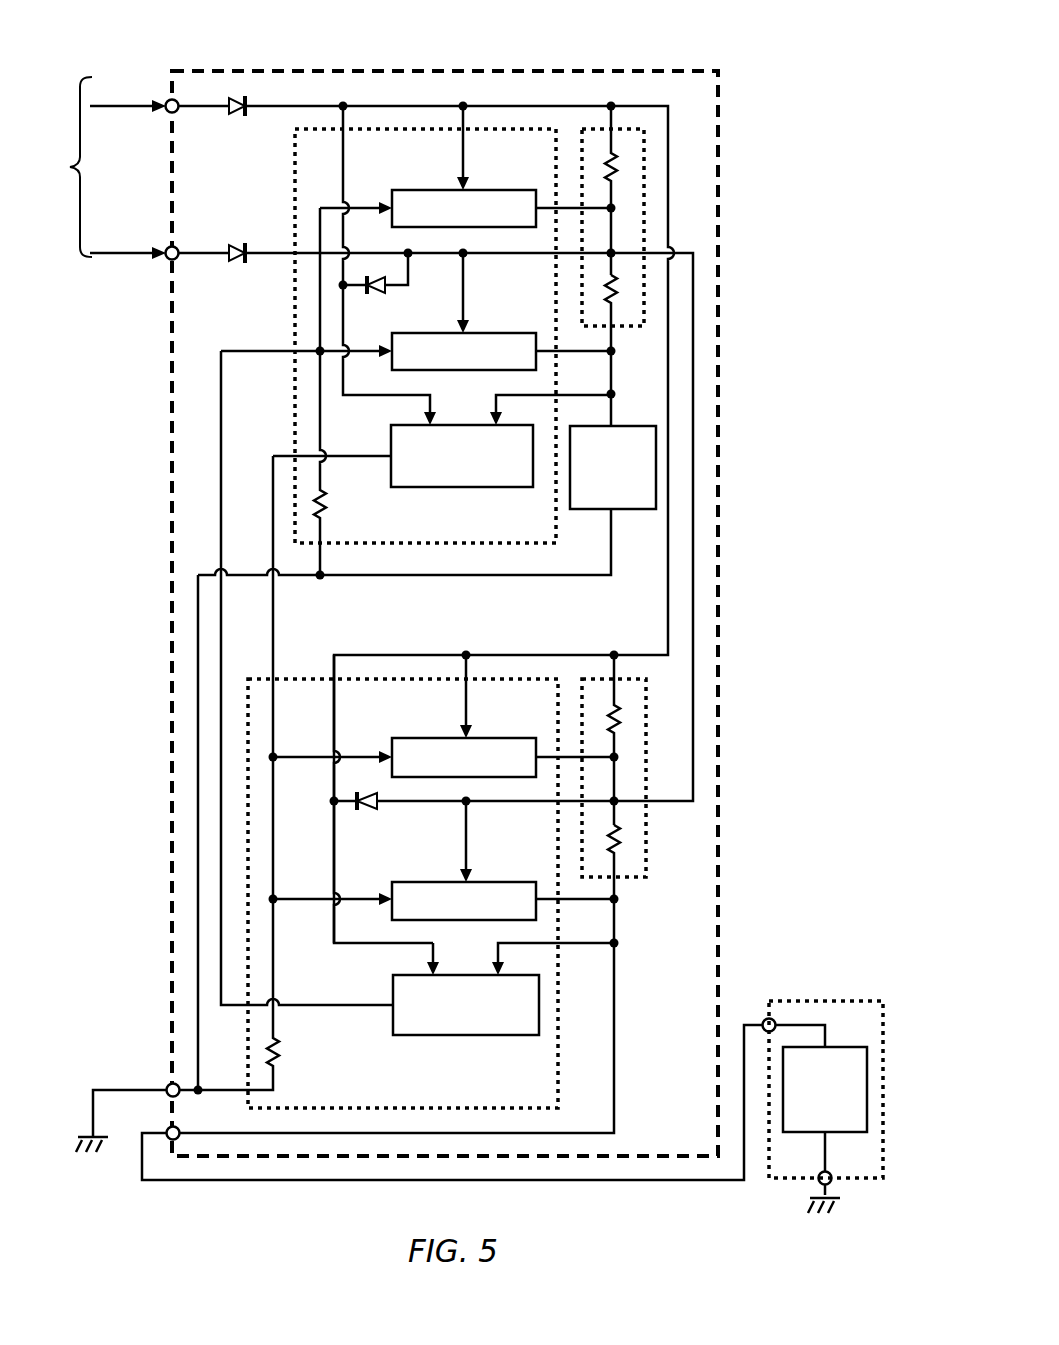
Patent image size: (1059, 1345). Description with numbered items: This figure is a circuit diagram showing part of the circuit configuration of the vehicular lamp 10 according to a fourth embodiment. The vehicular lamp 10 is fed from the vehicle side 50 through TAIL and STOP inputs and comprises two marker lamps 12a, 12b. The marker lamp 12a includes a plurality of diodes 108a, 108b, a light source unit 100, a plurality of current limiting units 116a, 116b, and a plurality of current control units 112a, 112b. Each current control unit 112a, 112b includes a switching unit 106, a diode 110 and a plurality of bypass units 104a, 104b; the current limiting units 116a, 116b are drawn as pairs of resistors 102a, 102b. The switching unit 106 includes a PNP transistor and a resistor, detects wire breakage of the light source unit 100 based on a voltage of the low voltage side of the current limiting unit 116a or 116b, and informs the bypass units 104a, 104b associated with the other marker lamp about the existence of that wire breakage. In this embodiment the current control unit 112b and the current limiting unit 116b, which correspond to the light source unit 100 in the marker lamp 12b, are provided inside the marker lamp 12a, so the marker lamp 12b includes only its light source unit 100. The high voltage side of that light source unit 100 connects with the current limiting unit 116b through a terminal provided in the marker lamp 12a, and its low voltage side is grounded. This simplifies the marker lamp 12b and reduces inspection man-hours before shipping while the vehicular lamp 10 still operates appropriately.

The vehicular lamp 10 is at (851, 28).
The marker lamp 12a is at (588, 70).
The marker lamp 12b is at (802, 1001).
The vehicle-side power supply (TAIL/STOP signals) 50 is at (100, 168).
The light source unit 100 is at (630, 510).
The resistor 102a is at (618, 161).
The resistor 102b is at (617, 310).
The bypass unit 104a is at (491, 189).
The bypass unit 104b is at (491, 332).
The switching unit 106 is at (465, 488).
The diode 108a is at (238, 115).
The diode 108b is at (238, 244).
The diode 110 is at (382, 291).
The current control unit 112a is at (418, 128).
The current control unit 112b is at (304, 679).
The current limiting unit 116a is at (646, 215).
The current limiting unit 116b is at (646, 763).